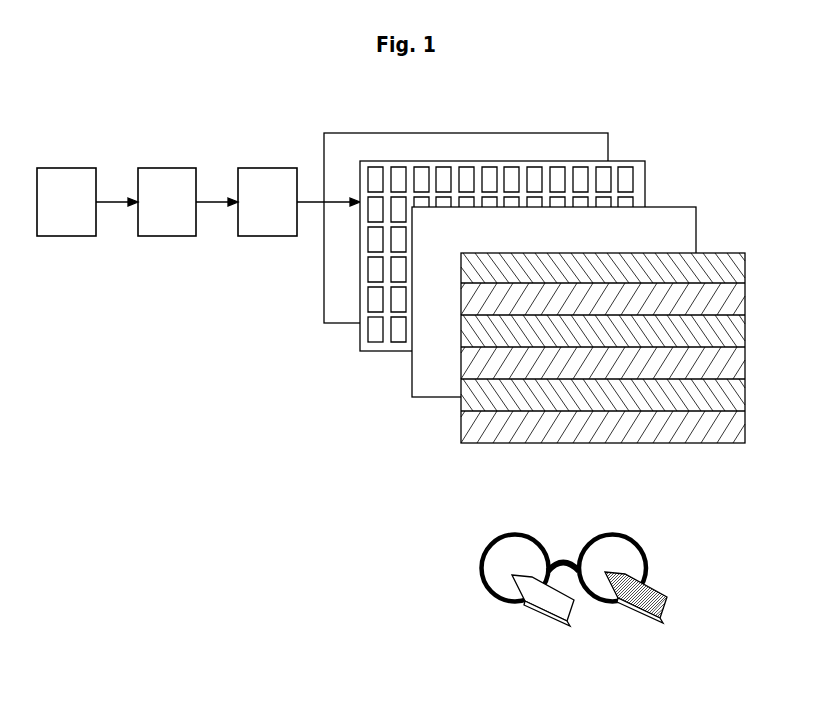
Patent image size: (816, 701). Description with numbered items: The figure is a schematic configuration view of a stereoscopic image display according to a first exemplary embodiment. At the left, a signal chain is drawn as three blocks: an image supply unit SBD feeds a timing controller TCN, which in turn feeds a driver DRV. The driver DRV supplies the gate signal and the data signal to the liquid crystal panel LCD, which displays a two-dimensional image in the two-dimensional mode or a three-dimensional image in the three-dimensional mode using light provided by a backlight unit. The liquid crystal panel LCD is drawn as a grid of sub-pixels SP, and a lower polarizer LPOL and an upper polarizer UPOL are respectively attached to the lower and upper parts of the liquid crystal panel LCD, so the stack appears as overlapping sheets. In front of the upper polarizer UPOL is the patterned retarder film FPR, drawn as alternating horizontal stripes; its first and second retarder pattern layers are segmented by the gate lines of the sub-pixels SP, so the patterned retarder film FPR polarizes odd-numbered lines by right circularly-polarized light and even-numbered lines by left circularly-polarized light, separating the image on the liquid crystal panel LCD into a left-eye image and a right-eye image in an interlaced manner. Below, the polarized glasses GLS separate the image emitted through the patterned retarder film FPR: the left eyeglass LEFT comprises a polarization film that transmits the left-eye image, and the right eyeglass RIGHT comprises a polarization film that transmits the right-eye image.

The image supply unit SBD is at (83, 211).
The timing controller TCN is at (183, 211).
The driver DRV is at (283, 211).
The lower polarizer LPOL is at (575, 133).
The liquid crystal panel LCD is at (513, 257).
The sub-pixel SP is at (377, 343).
The upper polarizer UPOL is at (667, 207).
The patterned retarder film FPR is at (715, 253).
The polarized glasses GLS is at (599, 565).
The left eyeglass LEFT is at (528, 565).
The right eyeglass RIGHT is at (683, 559).